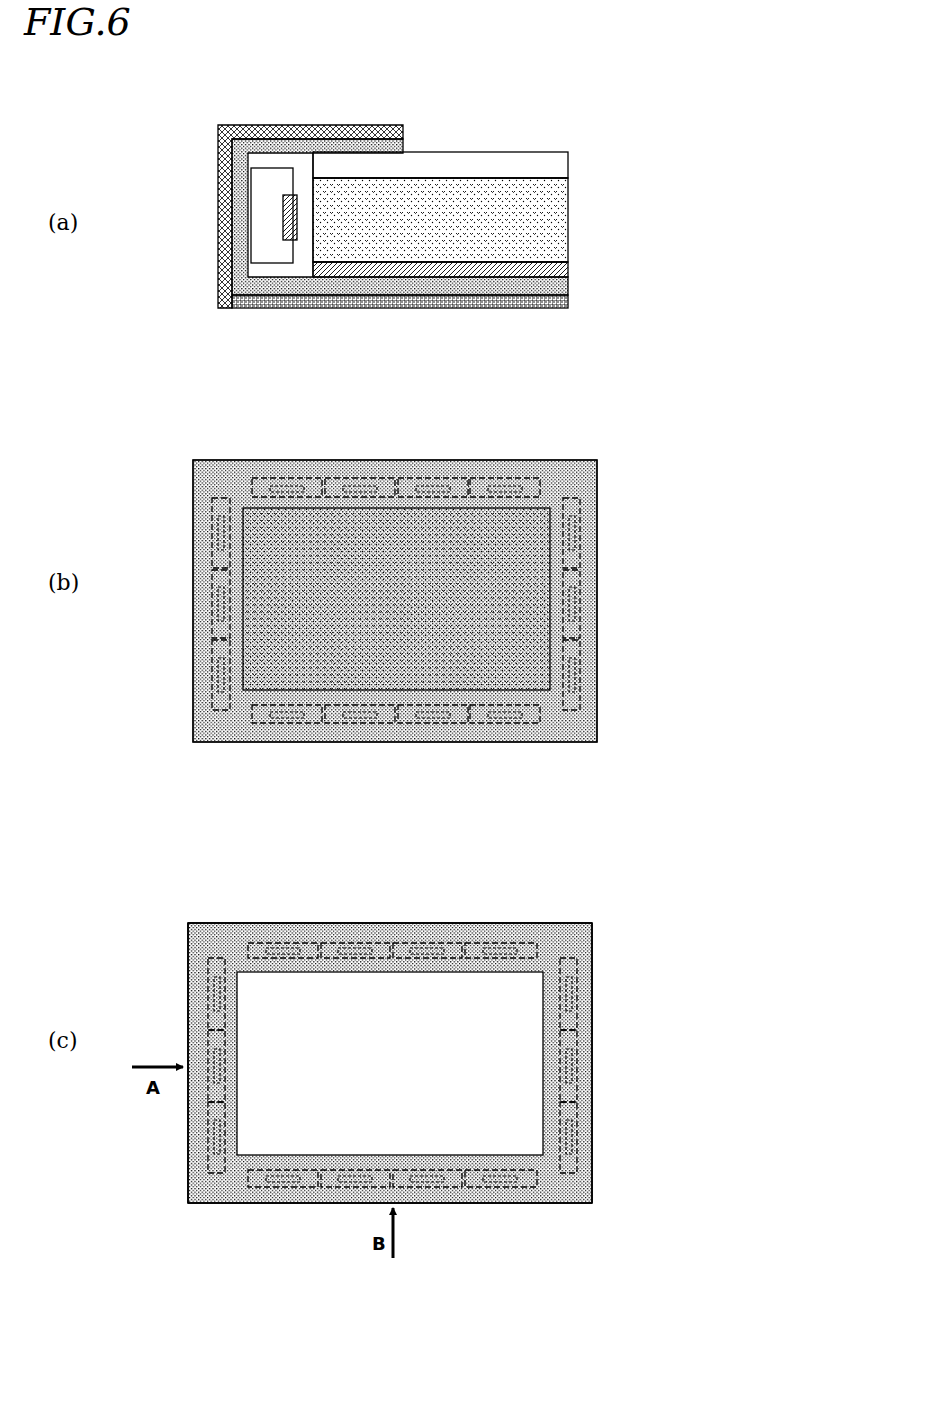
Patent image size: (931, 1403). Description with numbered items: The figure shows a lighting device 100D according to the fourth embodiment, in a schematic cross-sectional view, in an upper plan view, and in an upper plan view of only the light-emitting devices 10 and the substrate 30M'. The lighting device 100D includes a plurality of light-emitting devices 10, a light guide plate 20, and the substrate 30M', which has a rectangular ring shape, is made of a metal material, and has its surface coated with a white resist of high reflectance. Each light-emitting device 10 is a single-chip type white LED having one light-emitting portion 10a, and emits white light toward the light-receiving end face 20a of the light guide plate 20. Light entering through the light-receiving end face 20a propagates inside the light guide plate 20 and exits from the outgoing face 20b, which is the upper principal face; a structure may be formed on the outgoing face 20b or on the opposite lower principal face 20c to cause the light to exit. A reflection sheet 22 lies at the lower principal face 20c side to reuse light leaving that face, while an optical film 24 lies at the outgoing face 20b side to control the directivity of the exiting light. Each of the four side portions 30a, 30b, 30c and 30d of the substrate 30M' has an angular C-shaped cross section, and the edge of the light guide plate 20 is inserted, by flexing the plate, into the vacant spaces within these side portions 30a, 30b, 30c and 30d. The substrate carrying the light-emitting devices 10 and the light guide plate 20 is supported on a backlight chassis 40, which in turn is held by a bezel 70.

The bezel 70 is at (262, 125).
The substrate 30M' is at (424, 671).
The backlight chassis 40 is at (350, 310).
The light-emitting device 10 is at (270, 240).
The light-emitting portion 10a is at (283, 218).
The light-receiving end face 20a is at (313, 215).
The outgoing face 20b is at (448, 178).
The lower principal face 20c is at (442, 280).
The light guide plate 20 is at (552, 222).
The reflection sheet 22 is at (560, 272).
The optical film 24 is at (555, 158).
The lighting device 100D is at (585, 132).
The side portion 30a is at (186, 1054).
The side portion 30b is at (435, 1205).
The side portion 30c is at (594, 1048).
The side portion 30d is at (380, 944).